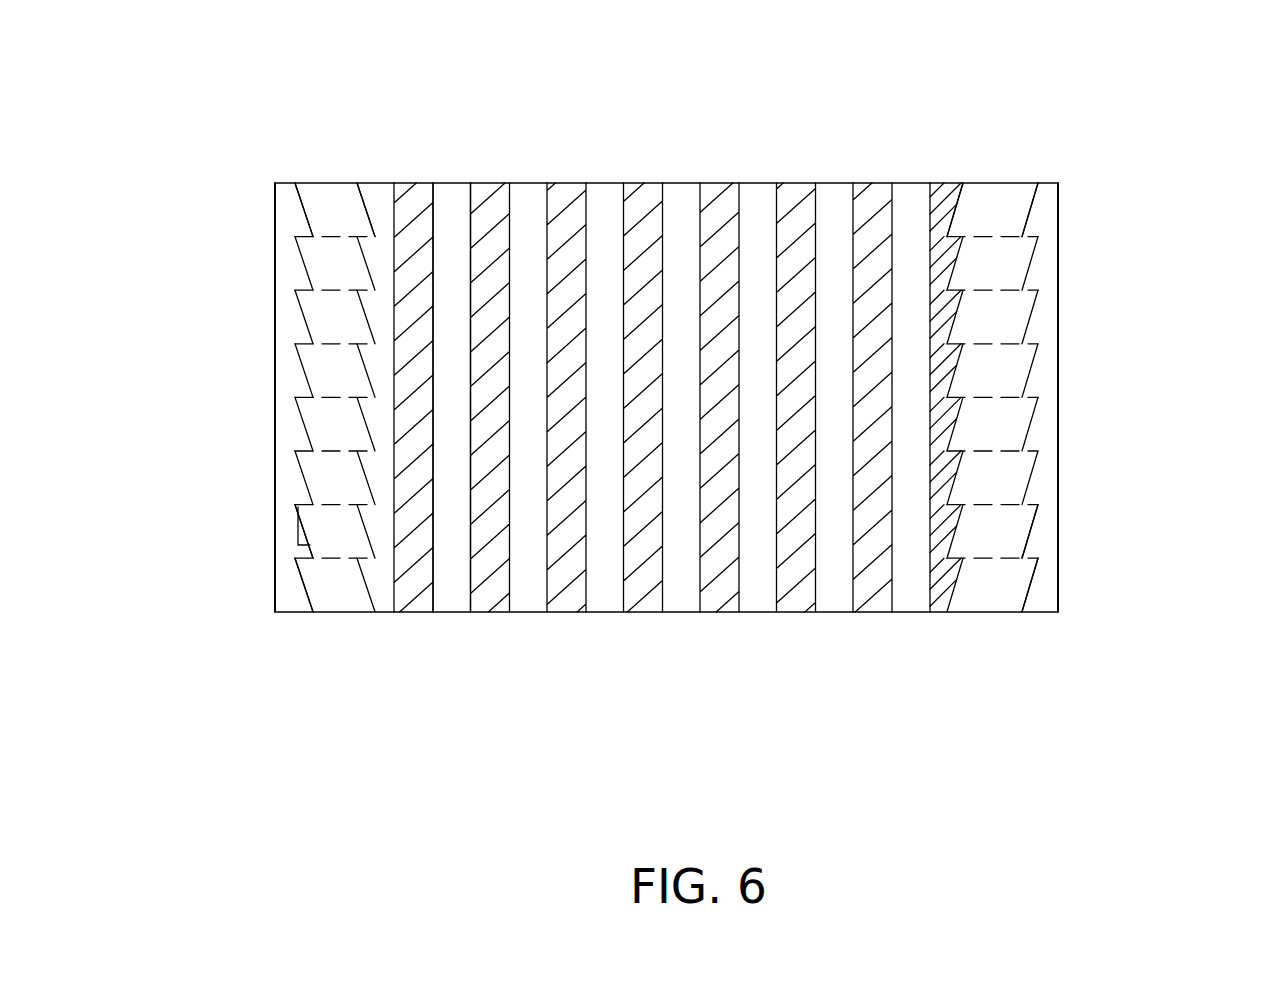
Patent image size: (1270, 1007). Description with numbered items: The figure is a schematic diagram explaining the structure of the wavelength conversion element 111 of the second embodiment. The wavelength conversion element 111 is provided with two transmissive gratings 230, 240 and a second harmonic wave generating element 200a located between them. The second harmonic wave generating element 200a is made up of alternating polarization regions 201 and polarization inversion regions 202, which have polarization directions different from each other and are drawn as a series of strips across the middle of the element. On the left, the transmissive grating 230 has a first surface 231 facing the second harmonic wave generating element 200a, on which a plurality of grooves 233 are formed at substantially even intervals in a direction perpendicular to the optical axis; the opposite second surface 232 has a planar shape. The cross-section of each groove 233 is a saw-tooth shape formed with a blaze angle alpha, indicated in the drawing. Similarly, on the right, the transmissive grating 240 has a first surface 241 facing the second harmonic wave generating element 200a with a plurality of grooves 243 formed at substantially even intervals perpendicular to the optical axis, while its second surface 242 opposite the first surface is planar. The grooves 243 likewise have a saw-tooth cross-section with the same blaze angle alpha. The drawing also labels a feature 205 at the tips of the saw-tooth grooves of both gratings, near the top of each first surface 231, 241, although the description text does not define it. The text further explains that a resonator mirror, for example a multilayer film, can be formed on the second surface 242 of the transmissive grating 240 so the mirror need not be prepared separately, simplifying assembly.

The wavelength conversion element 111 is at (316, 58).
The second harmonic wave generating element 200a is at (674, 398).
The polarization region 201 is at (461, 429).
The polarization inversion region 202 is at (637, 605).
The louver tip 205 is at (335, 191).
The transmissive grating 230 is at (287, 614).
The first surface 231 is at (318, 190).
The second surface 232 is at (236, 317).
The groove 233 is at (329, 542).
The transmissive grating 240 is at (1030, 614).
The first surface 241 is at (1007, 191).
The second surface 242 is at (1091, 315).
The groove 243 is at (1010, 600).